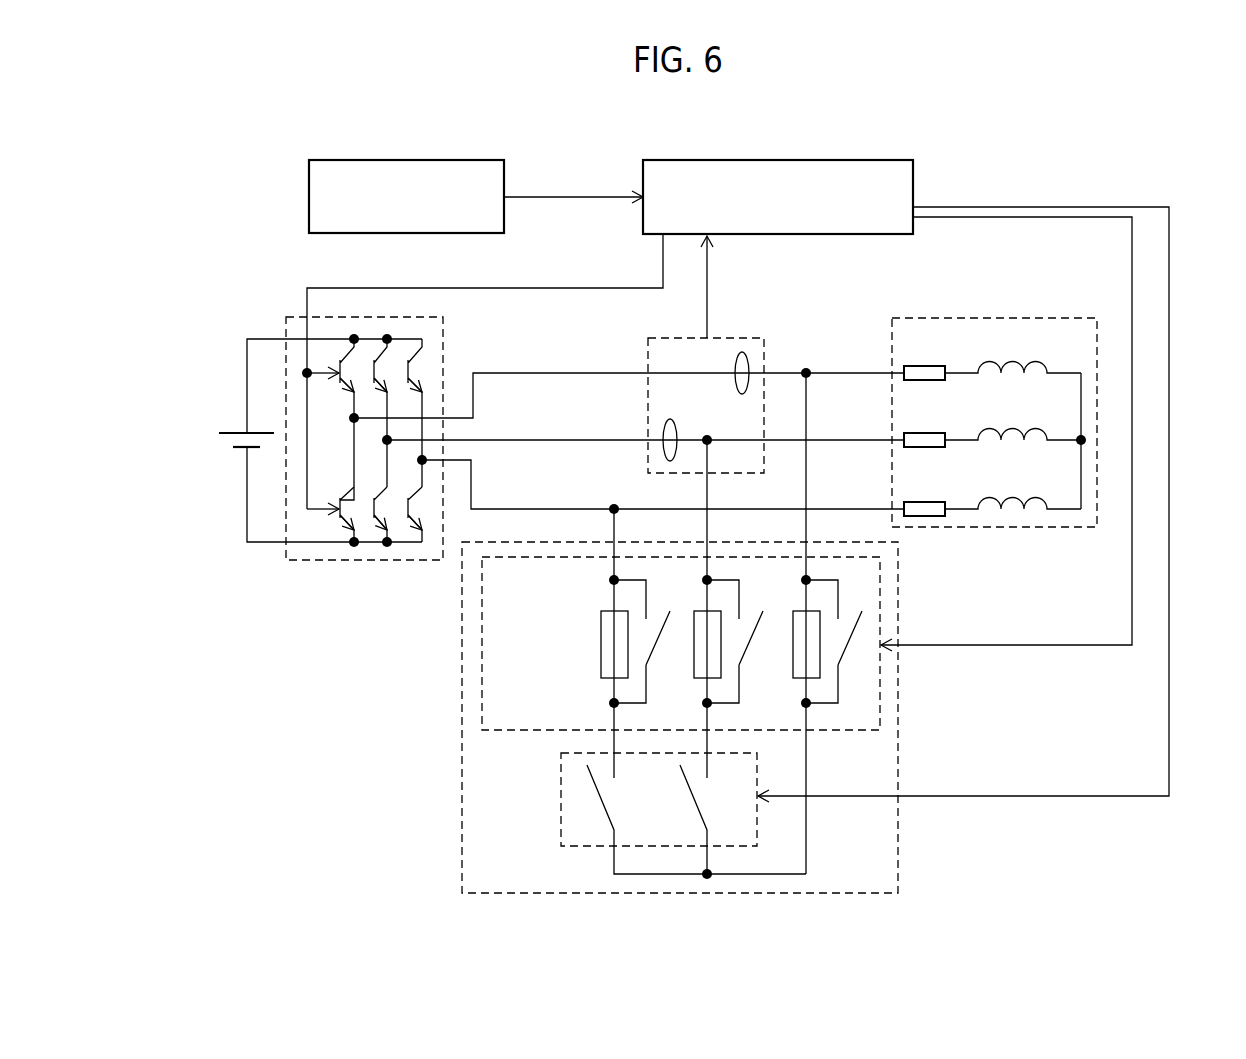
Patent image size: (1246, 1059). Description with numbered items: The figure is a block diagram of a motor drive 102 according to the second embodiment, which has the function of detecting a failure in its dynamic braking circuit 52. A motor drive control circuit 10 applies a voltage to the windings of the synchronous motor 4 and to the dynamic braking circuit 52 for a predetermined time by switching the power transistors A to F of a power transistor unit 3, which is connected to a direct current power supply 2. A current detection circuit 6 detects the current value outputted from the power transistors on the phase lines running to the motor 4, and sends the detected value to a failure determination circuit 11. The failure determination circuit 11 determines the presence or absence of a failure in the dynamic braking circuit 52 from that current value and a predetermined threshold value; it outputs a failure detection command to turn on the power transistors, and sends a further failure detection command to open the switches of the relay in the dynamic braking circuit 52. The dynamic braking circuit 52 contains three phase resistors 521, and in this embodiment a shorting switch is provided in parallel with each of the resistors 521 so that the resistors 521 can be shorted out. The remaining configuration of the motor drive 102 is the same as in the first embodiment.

The motor drive 102 is at (980, 153).
The motor drive control circuit 10 is at (443, 160).
The failure determination circuit 11 is at (808, 160).
The direct current power supply 2 is at (230, 458).
The power transistor unit 3 is at (443, 355).
The current detection circuit 6 is at (648, 350).
The synchronous motor 4 is at (970, 318).
The dynamic braking circuit 52 is at (898, 748).
The resistors 521 is at (482, 660).